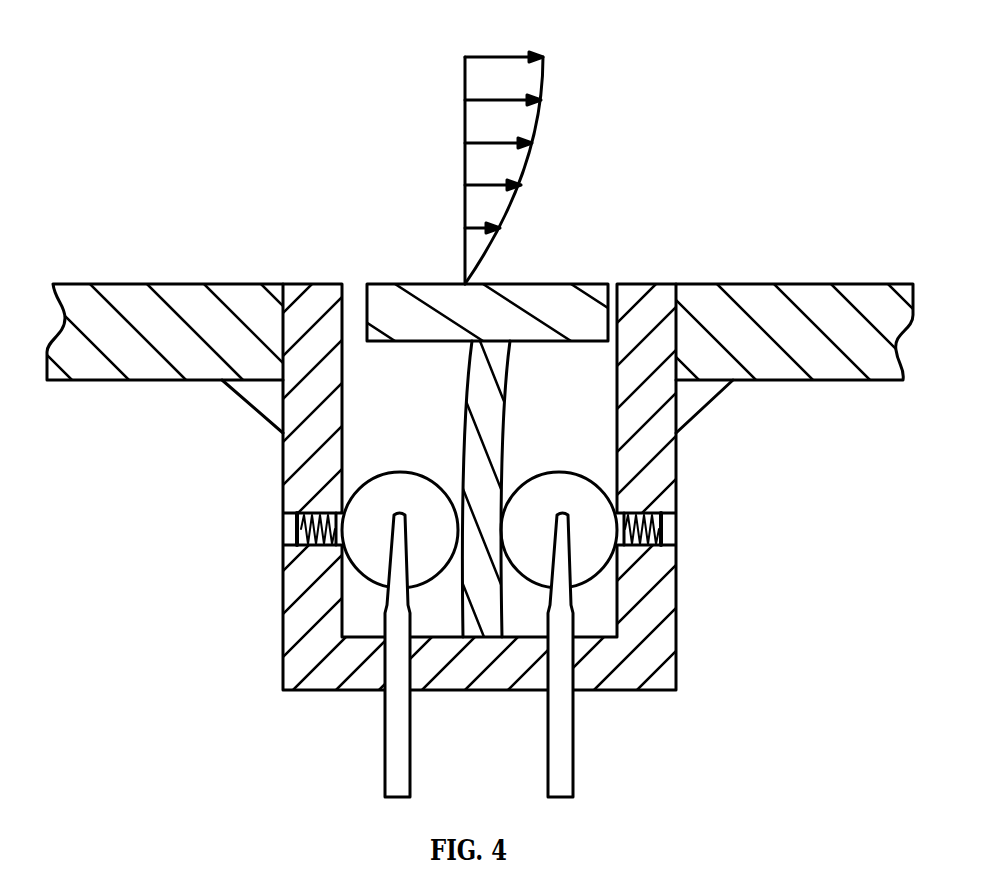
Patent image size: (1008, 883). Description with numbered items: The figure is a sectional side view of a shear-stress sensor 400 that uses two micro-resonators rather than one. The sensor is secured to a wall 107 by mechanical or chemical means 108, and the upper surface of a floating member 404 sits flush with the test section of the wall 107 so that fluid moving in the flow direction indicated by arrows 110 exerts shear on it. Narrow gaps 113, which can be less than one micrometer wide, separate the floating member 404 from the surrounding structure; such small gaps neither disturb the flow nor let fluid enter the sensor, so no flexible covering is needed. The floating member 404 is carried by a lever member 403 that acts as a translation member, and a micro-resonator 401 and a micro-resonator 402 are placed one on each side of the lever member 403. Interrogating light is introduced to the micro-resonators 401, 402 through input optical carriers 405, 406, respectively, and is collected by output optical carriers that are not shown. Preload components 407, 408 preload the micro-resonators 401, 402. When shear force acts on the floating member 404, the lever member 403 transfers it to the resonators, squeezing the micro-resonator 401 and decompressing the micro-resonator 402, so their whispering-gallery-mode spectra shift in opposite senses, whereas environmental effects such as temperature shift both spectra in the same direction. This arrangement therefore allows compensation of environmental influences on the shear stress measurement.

The arrows 110 is at (504, 146).
The wall 107 is at (140, 284).
The gaps 113 is at (356, 284).
The floating member 404 is at (447, 297).
The lever member 403 is at (487, 340).
The mechanical or chemical means 108 is at (250, 406).
The micro-resonator 402 is at (404, 480).
The micro-resonator 401 is at (563, 480).
The preload component 408 is at (283, 534).
The preload component 407 is at (677, 530).
The shear-stress sensor 400 is at (504, 487).
The input optical carrier 406 is at (383, 776).
The input optical carrier 405 is at (575, 764).